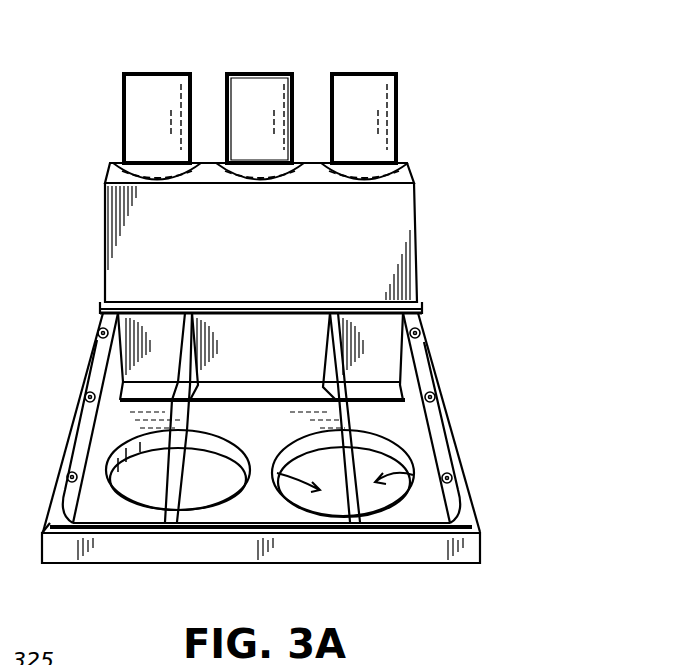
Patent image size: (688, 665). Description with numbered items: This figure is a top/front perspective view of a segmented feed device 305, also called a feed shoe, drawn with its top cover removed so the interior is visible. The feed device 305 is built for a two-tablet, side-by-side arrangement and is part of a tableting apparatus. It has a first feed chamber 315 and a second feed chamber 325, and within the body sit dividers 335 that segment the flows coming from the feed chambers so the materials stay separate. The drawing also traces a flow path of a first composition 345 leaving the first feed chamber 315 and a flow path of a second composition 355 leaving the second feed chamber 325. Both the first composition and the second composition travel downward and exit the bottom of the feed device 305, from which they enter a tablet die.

The feed device 305 is at (291, 43).
The first feed chamber 315 is at (378, 128).
The second feed chamber 325 is at (275, 113).
The dividers 335 is at (185, 380).
The flow path of a first composition 345 is at (413, 472).
The flow path of a second composition 355 is at (330, 432).